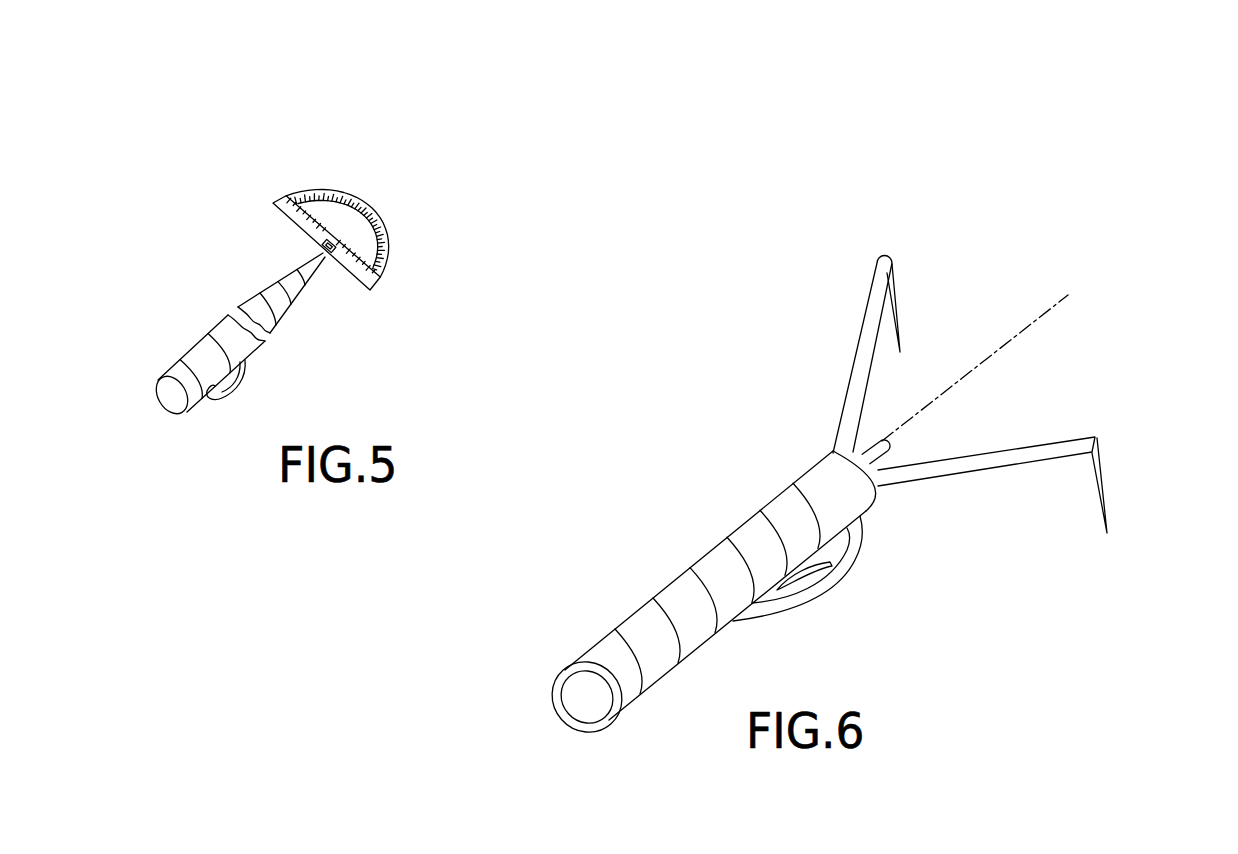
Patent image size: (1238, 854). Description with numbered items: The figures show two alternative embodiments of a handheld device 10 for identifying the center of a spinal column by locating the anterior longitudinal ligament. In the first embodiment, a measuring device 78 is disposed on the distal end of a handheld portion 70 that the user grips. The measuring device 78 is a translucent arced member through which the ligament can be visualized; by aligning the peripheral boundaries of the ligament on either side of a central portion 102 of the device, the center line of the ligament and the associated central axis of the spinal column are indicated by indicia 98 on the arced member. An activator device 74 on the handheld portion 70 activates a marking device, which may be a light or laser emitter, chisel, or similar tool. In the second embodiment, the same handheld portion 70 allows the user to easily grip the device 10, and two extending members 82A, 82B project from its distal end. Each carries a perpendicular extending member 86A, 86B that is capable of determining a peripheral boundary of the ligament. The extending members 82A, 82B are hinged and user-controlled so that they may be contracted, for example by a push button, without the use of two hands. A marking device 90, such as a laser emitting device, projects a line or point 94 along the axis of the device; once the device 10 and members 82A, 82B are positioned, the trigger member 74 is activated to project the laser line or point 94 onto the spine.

In FIG. 5, the device 10 is at (334, 347).
In FIG. 6, the device 10 is at (674, 497).
In FIG. 5, the handheld portion 70 is at (178, 365).
In FIG. 6, the handheld portion 70 is at (700, 637).
In FIG. 5, the activator device 74 is at (216, 400).
In FIG. 6, the activator device 74 is at (815, 577).
In FIG. 5, the measuring device 78 is at (322, 190).
In FIG. 6, the extending member 82A is at (864, 315).
In FIG. 6, the extending member 82B is at (1002, 467).
In FIG. 6, the perpendicular extending member 86A is at (898, 300).
In FIG. 6, the perpendicular extending member 86B is at (1103, 477).
In FIG. 6, the marking device 90 is at (877, 443).
In FIG. 6, the line or point 94 is at (960, 380).
In FIG. 5, the indicia 98 is at (326, 256).
In FIG. 5, the central portion 102 is at (372, 206).